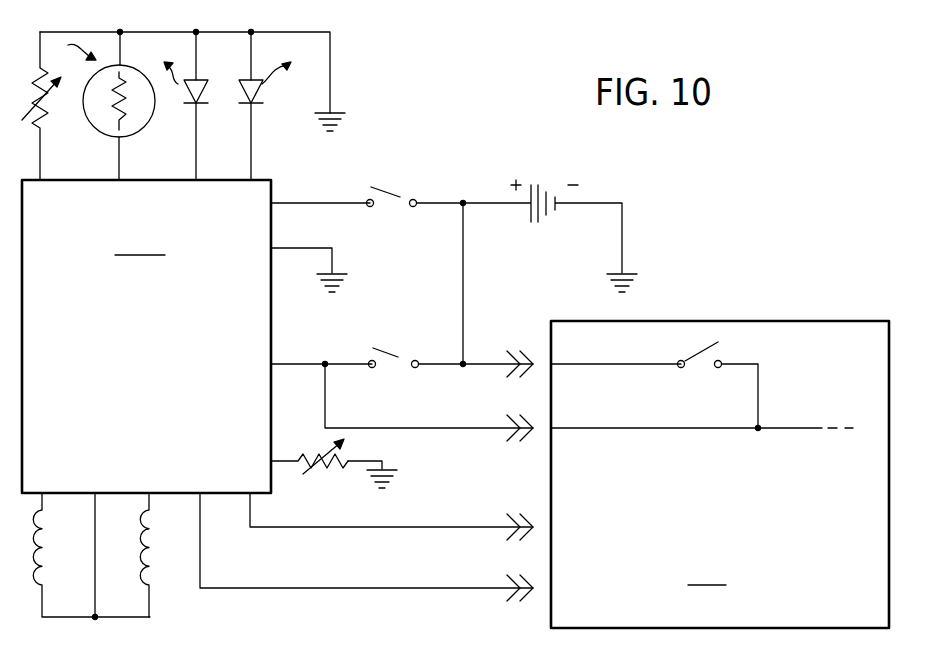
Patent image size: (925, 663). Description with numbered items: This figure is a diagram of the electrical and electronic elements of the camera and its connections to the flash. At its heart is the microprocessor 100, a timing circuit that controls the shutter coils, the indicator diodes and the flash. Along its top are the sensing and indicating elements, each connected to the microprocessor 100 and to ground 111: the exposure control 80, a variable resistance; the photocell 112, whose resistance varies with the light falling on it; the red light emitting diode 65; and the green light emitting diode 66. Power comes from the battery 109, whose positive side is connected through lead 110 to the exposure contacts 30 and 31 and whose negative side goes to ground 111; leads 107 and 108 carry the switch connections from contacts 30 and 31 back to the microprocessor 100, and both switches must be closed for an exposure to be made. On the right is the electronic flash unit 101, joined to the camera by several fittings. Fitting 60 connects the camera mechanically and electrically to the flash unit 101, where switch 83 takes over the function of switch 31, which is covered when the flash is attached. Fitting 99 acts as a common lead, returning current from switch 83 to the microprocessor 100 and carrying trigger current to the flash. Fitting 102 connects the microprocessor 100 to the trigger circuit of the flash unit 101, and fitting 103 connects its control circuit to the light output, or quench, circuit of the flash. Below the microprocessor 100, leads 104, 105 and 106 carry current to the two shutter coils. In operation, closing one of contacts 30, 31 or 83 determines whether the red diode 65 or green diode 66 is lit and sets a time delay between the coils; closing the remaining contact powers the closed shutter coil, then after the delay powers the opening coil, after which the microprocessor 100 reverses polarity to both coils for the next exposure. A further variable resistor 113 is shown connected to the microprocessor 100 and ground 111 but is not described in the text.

The exposure switch 30 is at (398, 192).
The exposure switch 31 is at (399, 350).
The fitting 60 is at (532, 353).
The red light emitting diode 65 is at (208, 97).
The green light emitting diode 66 is at (263, 97).
The exposure control 80 is at (47, 107).
The switch 83 is at (698, 357).
The fitting 99 is at (515, 418).
The microprocessor 100 is at (146, 336).
The electronic flash unit 101 is at (720, 474).
The fitting 102 is at (515, 517).
The fitting 103 is at (513, 597).
The lead 104 is at (46, 537).
The lead 105 is at (96, 509).
The lead 106 is at (150, 573).
The lead 107 is at (302, 203).
The lead 108 is at (297, 364).
The battery 109 is at (552, 192).
The lead 110 is at (466, 268).
The ground 111 is at (336, 111).
The photocell 112 is at (132, 133).
The variable resistor 113 is at (336, 470).